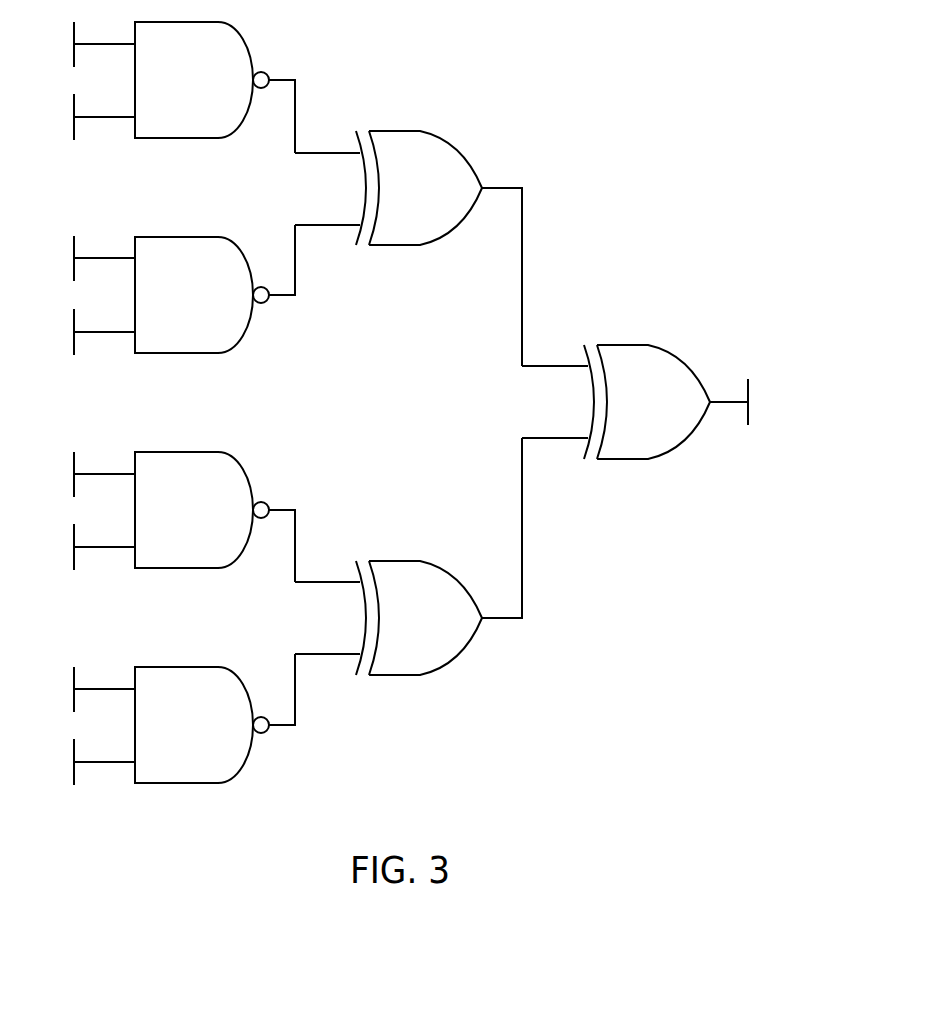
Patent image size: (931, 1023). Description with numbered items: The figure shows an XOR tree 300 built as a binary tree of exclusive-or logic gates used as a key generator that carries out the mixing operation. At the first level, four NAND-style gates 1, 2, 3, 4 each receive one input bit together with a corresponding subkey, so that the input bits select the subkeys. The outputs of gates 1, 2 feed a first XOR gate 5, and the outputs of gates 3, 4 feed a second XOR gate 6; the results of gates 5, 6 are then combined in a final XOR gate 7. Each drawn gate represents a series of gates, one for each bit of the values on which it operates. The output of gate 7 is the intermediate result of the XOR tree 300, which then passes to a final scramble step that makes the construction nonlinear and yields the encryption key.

The NAND gate 1 is at (164, 102).
The NAND gate 2 is at (164, 311).
The NAND gate 3 is at (164, 532).
The NAND gate 4 is at (164, 740).
The XOR gate 5 is at (408, 248).
The XOR gate 6 is at (408, 577).
The XOR gate 7 is at (670, 422).
The XOR tree 300 is at (612, 90).